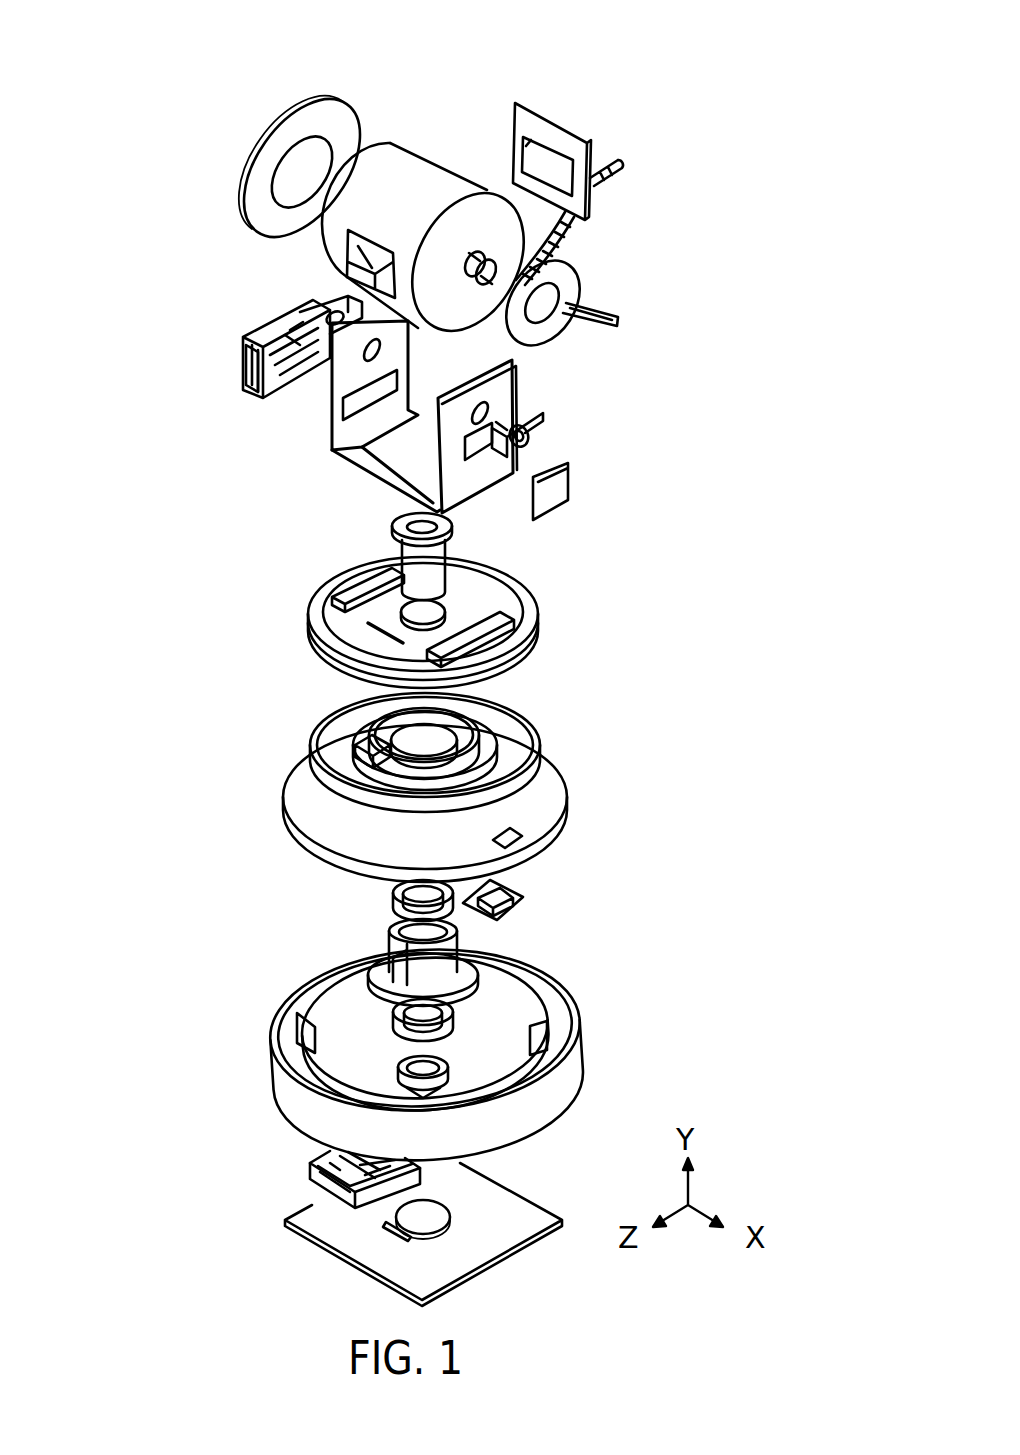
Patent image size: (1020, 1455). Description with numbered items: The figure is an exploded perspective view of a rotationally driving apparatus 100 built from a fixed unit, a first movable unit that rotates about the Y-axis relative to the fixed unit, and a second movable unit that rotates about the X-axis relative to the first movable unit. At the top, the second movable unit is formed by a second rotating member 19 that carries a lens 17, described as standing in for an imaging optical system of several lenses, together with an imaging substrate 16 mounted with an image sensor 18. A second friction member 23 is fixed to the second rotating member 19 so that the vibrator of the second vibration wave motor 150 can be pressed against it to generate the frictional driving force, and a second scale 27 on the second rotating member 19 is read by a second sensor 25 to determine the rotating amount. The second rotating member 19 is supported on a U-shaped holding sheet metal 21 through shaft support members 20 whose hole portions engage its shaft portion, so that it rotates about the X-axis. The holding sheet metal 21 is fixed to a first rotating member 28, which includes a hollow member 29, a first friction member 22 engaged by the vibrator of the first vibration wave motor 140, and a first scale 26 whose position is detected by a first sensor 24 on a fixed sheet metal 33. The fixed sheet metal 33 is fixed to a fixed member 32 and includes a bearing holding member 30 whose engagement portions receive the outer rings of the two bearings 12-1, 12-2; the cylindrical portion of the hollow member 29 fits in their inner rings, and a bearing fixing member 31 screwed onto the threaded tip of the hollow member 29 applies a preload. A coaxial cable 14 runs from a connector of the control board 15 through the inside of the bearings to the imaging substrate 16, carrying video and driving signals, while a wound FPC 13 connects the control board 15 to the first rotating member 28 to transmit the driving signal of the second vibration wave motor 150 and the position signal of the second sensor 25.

The rotationally driving apparatus 100 is at (230, 48).
The second friction member 23 is at (272, 158).
The lens 17 is at (367, 257).
The second rotating member 19 is at (400, 184).
The image sensor 18 is at (514, 118).
The imaging substrate 16 is at (563, 140).
The coaxial cable 14 is at (558, 238).
The second scale 27 is at (583, 323).
The shaft support member 20 is at (273, 323).
The second vibration wave motor 150 is at (228, 377).
The holding sheet metal 21 is at (503, 387).
The second sensor 25 is at (570, 478).
The hollow member 29 is at (423, 565).
The first rotating member 28 is at (370, 640).
The wound FPC 13 is at (413, 768).
The first friction member 22 is at (490, 728).
The first scale 26 is at (528, 751).
The fixed sheet metal 33 is at (313, 793).
The bearing 12-2 is at (395, 910).
The first sensor 24 is at (523, 890).
The bearing holding member 30 is at (397, 968).
The bearing fixing member 31 is at (392, 1034).
The bearing 12-1 is at (523, 1005).
The fixed member 32 is at (553, 1088).
The control board 15 is at (503, 1215).
The first vibration wave motor 140 is at (290, 1190).